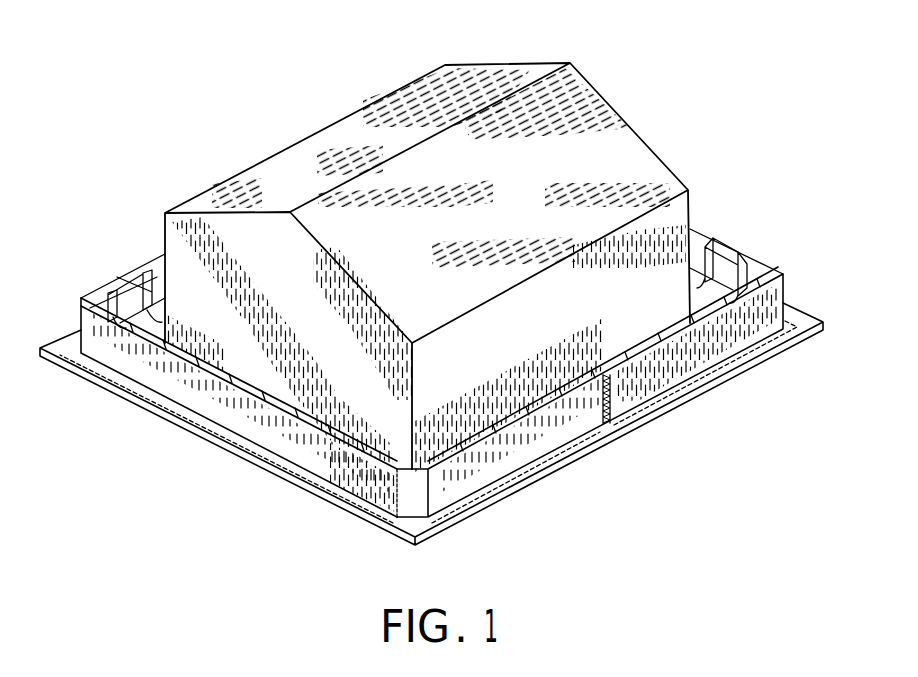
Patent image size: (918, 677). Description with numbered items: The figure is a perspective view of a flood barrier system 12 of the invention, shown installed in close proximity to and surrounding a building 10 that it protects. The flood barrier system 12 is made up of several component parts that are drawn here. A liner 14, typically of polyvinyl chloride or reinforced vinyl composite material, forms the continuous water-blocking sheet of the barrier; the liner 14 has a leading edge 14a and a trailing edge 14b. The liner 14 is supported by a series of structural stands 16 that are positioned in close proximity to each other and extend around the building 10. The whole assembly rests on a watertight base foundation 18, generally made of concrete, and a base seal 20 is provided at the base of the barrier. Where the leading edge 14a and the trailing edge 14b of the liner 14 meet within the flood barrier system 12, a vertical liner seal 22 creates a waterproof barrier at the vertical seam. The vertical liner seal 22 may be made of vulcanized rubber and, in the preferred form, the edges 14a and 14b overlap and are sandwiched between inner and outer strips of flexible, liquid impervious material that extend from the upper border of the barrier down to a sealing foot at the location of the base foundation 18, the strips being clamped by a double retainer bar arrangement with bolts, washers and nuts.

The building 10 is at (335, 143).
The flood barrier system 12 is at (123, 357).
The liner 14 is at (468, 482).
The leading edge 14a is at (597, 415).
The trailing edge 14b is at (610, 385).
The structural stands 16 is at (132, 292).
The watertight base foundation 18 is at (417, 528).
The base seal 20 is at (513, 487).
The vertical liner seal 22 is at (610, 390).